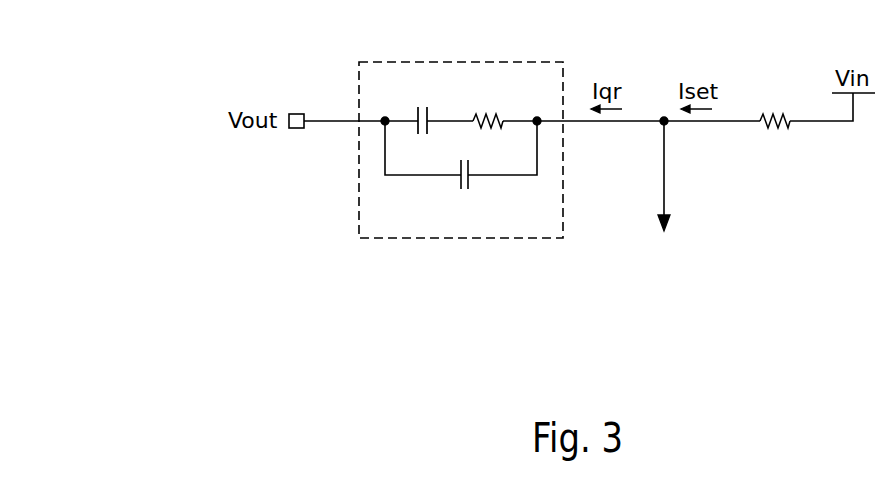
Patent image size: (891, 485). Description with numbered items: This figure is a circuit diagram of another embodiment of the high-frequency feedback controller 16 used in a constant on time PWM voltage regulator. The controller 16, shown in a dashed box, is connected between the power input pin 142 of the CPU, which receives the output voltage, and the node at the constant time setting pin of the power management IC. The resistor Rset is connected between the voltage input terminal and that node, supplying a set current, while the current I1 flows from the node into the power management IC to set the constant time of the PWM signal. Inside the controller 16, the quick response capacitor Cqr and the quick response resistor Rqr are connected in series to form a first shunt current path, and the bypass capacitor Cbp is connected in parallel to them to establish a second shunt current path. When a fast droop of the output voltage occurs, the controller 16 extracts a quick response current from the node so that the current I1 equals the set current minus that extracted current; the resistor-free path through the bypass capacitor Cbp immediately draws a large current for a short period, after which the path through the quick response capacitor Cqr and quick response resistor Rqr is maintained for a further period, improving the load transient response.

The high-frequency feedback controller 16 is at (461, 124).
The power input pin 142 is at (291, 129).
The quick response capacitor Cqr is at (429, 105).
The quick response resistor Rqr is at (502, 104).
The bypass capacitor Cbp is at (461, 170).
The resistor Rset is at (774, 136).
The current I1 is at (676, 163).